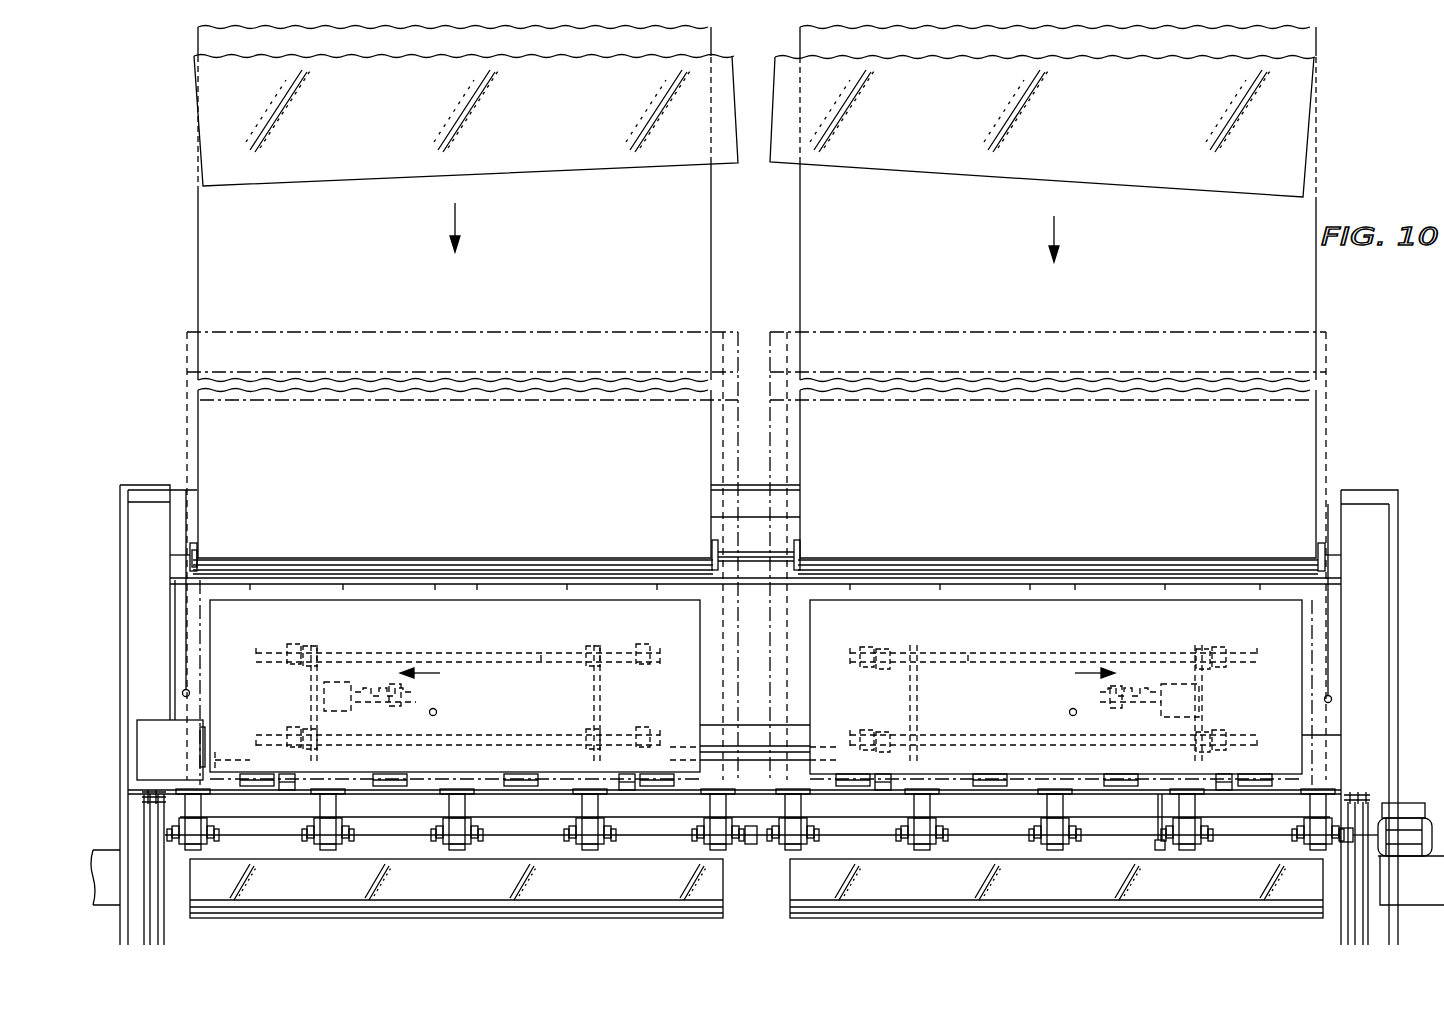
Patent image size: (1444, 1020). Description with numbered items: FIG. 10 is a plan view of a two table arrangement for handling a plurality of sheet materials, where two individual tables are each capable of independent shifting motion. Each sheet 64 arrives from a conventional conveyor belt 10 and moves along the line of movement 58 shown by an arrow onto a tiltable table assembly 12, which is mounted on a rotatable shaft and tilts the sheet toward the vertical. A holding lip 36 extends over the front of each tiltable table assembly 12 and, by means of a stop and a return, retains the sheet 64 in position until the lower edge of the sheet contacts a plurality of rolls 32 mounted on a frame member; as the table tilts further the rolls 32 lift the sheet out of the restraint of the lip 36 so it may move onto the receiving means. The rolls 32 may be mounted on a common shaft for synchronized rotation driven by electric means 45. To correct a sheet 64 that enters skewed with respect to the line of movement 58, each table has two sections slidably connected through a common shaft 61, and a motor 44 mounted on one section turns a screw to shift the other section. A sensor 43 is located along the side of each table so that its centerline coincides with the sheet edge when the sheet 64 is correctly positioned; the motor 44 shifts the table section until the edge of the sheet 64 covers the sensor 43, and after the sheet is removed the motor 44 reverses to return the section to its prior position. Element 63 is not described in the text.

The conveyor belt 10 is at (197, 300).
The tiltable table assembly 12 is at (756, 687).
The rolls 32 is at (191, 848).
The holding lip 36 is at (255, 775).
The sensor 43 is at (182, 692).
The motor 44 is at (323, 700).
The electric means 45 is at (1410, 805).
The line of movement 58 is at (456, 213).
The common shaft 61 is at (541, 661).
The pivot 63 is at (436, 709).
The sheet 64 is at (754, 126).